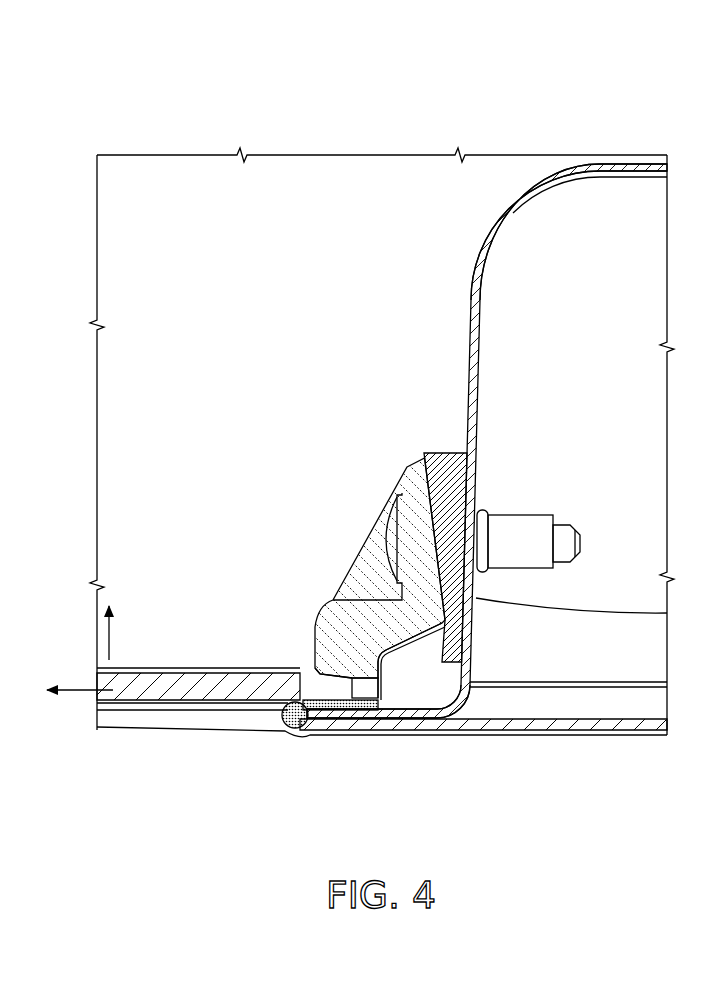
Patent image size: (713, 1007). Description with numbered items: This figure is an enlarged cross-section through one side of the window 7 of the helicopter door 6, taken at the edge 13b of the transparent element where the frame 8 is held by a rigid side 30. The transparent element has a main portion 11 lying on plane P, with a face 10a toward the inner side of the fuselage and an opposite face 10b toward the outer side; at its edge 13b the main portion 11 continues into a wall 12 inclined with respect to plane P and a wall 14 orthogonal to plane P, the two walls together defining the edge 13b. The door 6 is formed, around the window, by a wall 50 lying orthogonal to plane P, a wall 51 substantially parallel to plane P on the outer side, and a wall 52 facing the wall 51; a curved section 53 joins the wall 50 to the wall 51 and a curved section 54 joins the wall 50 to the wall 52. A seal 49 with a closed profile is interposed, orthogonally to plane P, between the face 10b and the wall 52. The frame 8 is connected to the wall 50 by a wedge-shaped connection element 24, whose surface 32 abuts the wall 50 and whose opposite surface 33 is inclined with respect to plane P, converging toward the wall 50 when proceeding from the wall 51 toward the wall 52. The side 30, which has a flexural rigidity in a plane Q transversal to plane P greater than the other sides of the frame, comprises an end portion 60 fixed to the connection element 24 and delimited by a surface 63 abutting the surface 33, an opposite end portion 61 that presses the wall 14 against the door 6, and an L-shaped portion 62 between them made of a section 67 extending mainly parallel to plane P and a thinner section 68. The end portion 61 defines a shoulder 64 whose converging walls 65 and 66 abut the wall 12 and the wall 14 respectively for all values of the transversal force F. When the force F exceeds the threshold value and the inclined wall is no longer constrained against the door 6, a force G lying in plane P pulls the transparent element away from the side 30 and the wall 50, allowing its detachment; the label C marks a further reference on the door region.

The door 6 is at (684, 136).
The window 7 is at (207, 239).
The frame 8 is at (541, 439).
The face 10a is at (195, 665).
The face 10b is at (172, 709).
The main portion 11 is at (140, 665).
The wall 12 is at (353, 669).
The edge 13b is at (332, 642).
The wall 14 is at (373, 701).
The connection element 24 is at (427, 429).
The side 30 is at (424, 573).
The surface 32 is at (476, 463).
The surface 33 is at (429, 533).
The seal 49 is at (288, 711).
The wall 50 is at (481, 480).
The wall 51 is at (620, 157).
The wall 52 is at (432, 722).
The curved section 53 is at (529, 213).
The curved section 54 is at (469, 704).
The end portion 60 is at (416, 461).
The end portion 61 is at (376, 680).
The portion 62 is at (377, 616).
The surface 63 is at (432, 486).
The shoulder 64 is at (345, 691).
The wall 65 is at (307, 663).
The wall 66 is at (360, 713).
The section 67 is at (473, 645).
The section 68 is at (320, 661).
The cover C is at (706, 196).
The plane Q is at (145, 199).
The force F is at (115, 633).
The force G is at (80, 677).